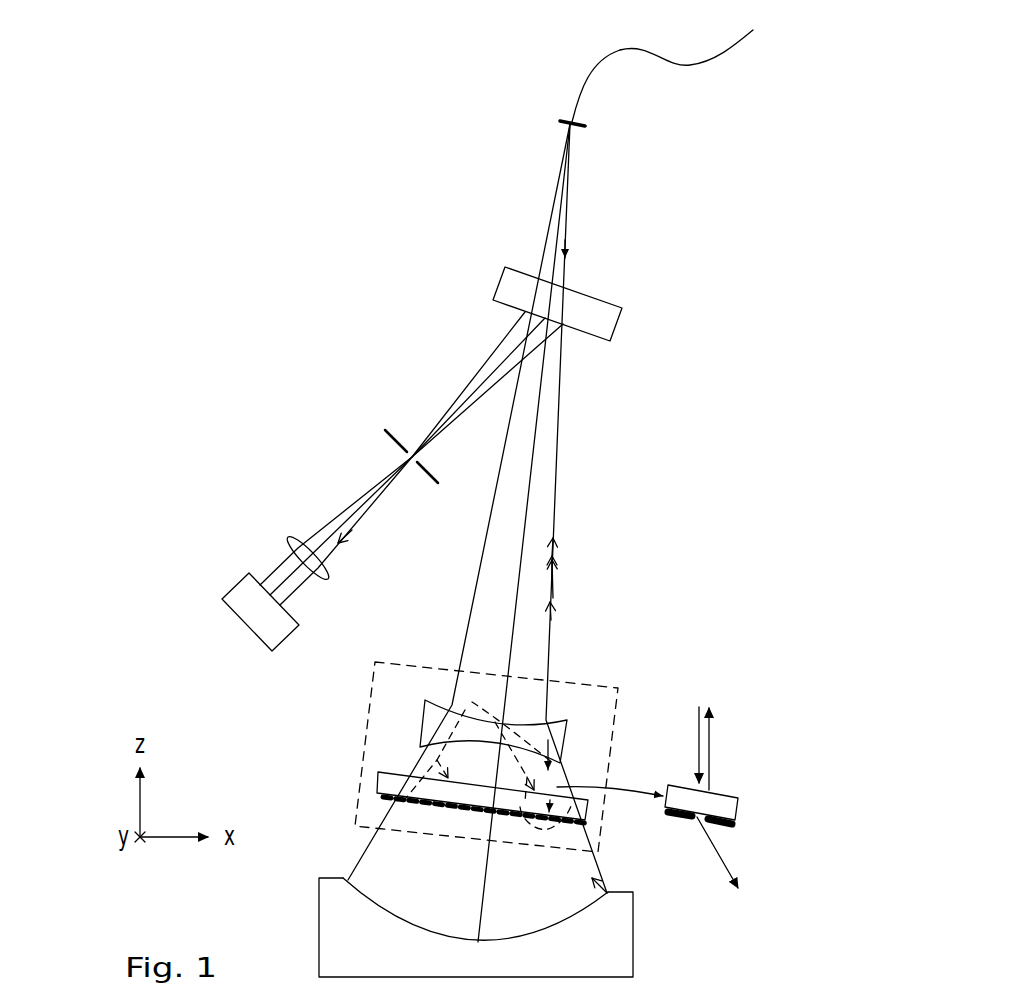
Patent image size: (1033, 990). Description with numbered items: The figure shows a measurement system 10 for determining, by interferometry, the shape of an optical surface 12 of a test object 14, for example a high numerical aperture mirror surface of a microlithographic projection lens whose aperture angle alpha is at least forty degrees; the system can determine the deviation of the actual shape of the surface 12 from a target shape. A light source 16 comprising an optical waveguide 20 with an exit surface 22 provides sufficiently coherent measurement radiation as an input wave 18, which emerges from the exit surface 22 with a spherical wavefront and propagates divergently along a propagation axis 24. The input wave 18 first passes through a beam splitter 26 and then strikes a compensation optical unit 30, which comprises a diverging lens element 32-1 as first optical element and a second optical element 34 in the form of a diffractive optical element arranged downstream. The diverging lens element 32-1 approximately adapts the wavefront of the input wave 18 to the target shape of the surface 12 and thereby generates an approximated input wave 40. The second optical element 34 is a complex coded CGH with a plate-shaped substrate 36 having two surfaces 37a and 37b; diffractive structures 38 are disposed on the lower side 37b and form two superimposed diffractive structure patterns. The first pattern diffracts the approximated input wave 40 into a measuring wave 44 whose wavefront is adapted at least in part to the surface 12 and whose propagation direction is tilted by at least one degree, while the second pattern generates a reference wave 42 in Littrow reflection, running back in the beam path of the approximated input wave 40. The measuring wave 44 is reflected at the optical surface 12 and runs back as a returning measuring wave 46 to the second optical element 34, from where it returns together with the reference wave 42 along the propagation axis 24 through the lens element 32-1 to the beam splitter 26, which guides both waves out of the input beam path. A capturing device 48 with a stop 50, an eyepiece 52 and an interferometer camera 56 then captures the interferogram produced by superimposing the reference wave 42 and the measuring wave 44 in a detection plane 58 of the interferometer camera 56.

The measurement system 10 is at (412, 263).
The optical surface 12 is at (428, 932).
The test object 14 is at (633, 945).
The light source 16 is at (585, 50).
The input wave 18 is at (568, 240).
The optical waveguide 20 is at (690, 66).
The exit surface 22 is at (578, 128).
The propagation axis 24 is at (537, 405).
The beam splitter 26 is at (615, 332).
The compensation optical unit 30 is at (602, 690).
The diverging lens element 32-1 is at (418, 700).
The second optical element 34 is at (388, 765).
The plate-shaped substrate 36 is at (378, 781).
The upper surface of the substrate 37a is at (468, 756).
The lower side of the substrate 37b is at (447, 808).
The diffractive structures 38 is at (385, 810).
The approximated input wave 40 is at (560, 770).
The reference wave 42 is at (556, 545).
The measuring wave 44 is at (573, 842).
The returning measuring wave 46 is at (556, 566).
The capturing device 48 is at (262, 530).
The stop 50 is at (387, 442).
The eyepiece 52 is at (335, 577).
The interferometer camera 56 is at (240, 630).
The detection plane 58 is at (300, 614).
The aperture angle alpha is at (478, 706).